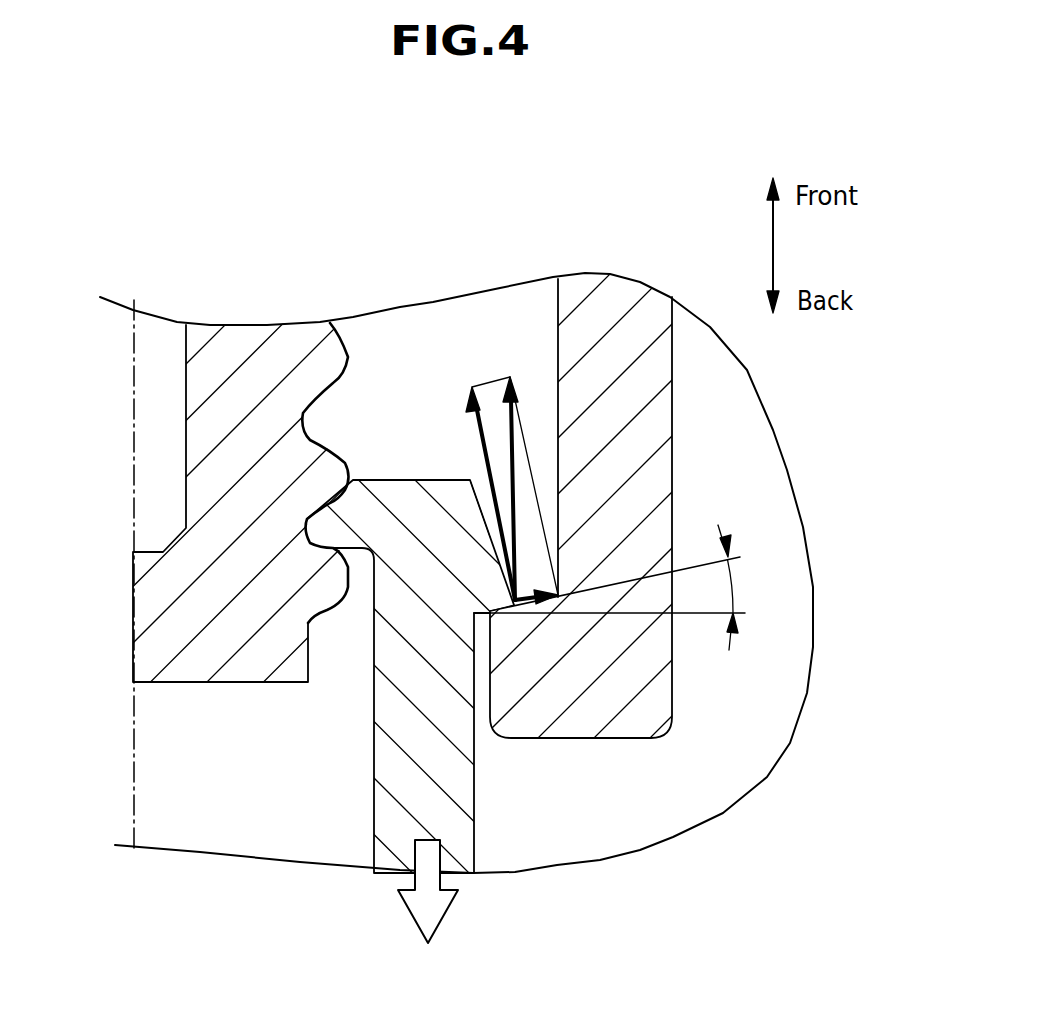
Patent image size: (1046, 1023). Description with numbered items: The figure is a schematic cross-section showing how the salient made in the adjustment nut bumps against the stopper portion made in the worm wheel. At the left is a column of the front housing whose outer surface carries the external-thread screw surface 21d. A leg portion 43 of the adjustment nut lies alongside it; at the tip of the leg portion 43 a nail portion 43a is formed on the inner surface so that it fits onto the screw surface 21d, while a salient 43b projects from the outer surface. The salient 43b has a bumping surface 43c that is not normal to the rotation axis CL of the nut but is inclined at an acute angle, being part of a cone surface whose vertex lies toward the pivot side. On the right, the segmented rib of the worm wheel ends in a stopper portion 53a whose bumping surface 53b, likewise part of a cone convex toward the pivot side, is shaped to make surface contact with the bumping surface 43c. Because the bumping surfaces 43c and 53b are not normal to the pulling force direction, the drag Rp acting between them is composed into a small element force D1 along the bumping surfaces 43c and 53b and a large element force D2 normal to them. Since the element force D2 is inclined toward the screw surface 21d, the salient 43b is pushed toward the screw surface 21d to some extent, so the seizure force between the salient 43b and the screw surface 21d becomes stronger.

The screw surface 21d is at (253, 368).
The leg portion 43 is at (390, 828).
The nail portion 43a is at (343, 530).
The salient 43b is at (467, 500).
The bumping surface 43c is at (494, 616).
The stopper portion 53a is at (522, 687).
The bumping surface 53b is at (497, 610).
The axis CL is at (135, 757).
The element force D1 is at (548, 600).
The element force D2 is at (494, 495).
The drag Rp is at (510, 460).